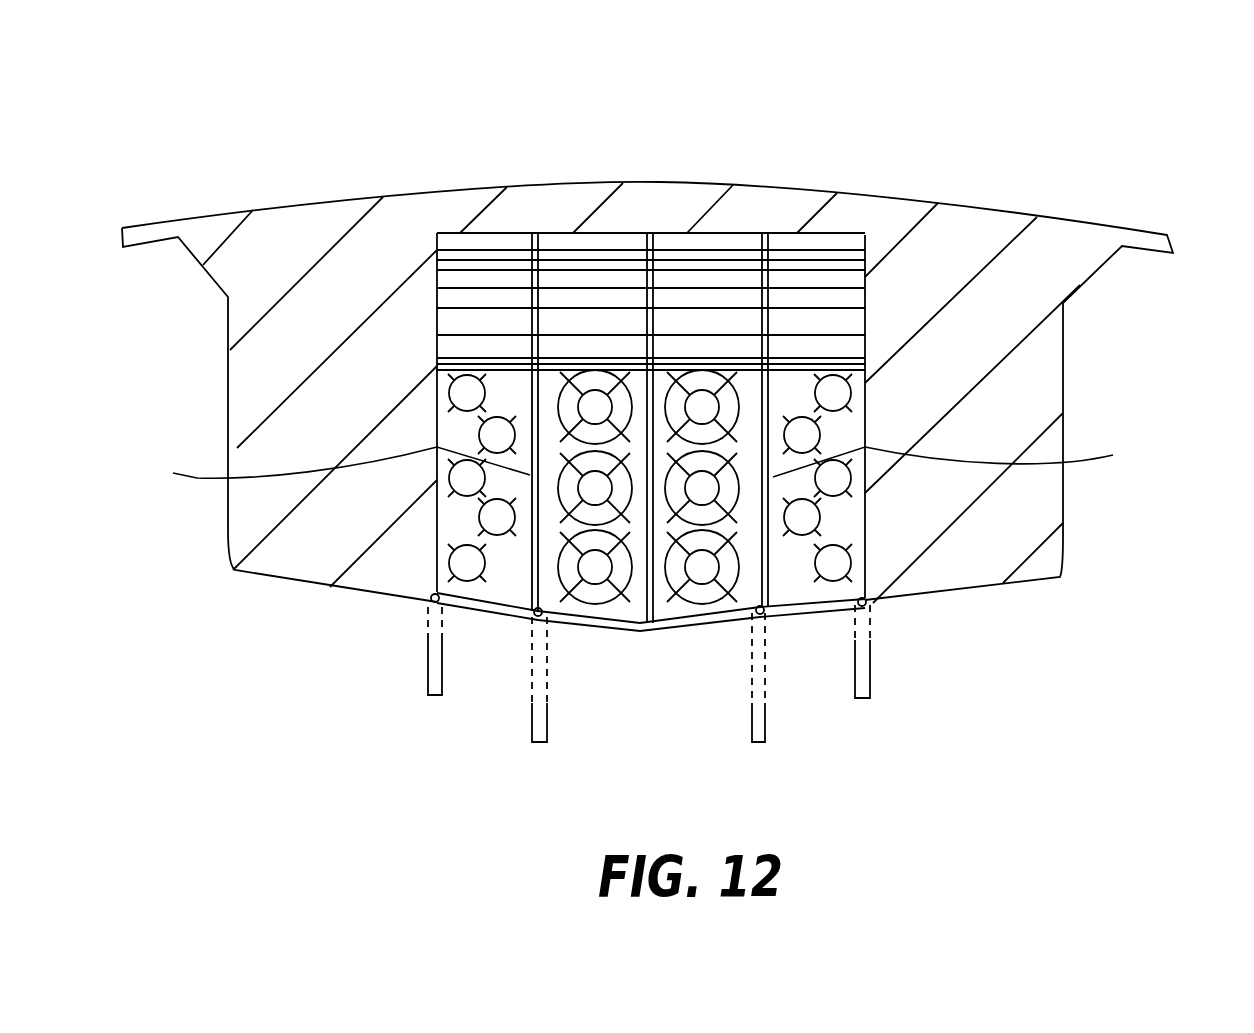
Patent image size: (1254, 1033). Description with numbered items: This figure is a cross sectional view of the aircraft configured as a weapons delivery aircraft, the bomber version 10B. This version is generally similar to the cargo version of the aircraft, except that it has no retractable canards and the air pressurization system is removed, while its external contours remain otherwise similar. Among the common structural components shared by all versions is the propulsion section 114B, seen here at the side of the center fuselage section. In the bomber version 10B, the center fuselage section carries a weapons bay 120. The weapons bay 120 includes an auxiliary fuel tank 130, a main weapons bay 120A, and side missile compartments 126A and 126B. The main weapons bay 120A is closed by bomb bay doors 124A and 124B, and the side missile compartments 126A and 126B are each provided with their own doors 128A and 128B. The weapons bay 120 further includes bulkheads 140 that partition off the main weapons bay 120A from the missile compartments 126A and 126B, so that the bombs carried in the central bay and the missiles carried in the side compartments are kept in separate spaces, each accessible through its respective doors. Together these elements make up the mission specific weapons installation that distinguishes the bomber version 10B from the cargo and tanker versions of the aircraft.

The weapons carrier (bomber) version aircraft 10B is at (1112, 142).
The propulsion section 114B is at (247, 208).
The weapons bay 120 is at (867, 297).
The main weapons bay 120A is at (648, 577).
The bomb bay door 124A is at (590, 625).
The bomb bay door 124B is at (708, 620).
The side missile compartment 126A is at (456, 532).
The side missile compartment 126B is at (846, 537).
The missile compartment door 128A is at (482, 615).
The missile compartment door 128B is at (808, 615).
The auxiliary fuel tank 130 is at (815, 237).
The bulkhead 140 is at (643, 466).